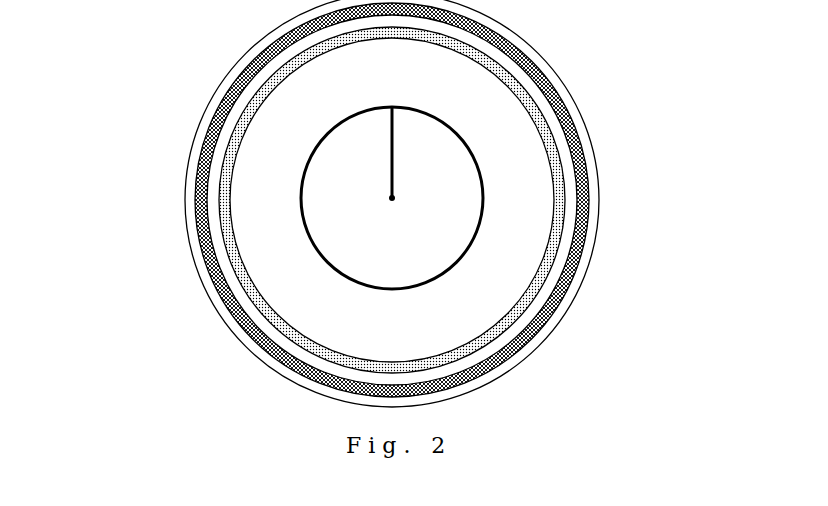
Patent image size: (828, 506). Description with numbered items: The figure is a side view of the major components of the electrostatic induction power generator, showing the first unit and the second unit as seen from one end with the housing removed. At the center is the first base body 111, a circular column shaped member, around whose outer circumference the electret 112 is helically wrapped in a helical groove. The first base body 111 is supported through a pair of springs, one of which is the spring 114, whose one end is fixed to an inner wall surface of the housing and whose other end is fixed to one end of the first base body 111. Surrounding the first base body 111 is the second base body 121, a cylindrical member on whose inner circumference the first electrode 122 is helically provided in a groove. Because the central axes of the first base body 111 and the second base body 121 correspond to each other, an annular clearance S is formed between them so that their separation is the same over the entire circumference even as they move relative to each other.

The annular clearance S is at (250, 92).
The first base body 111 is at (252, 210).
The electret 112 is at (230, 142).
The spring 114 is at (478, 232).
The second base body 121 is at (573, 107).
The first electrode 122 is at (580, 140).